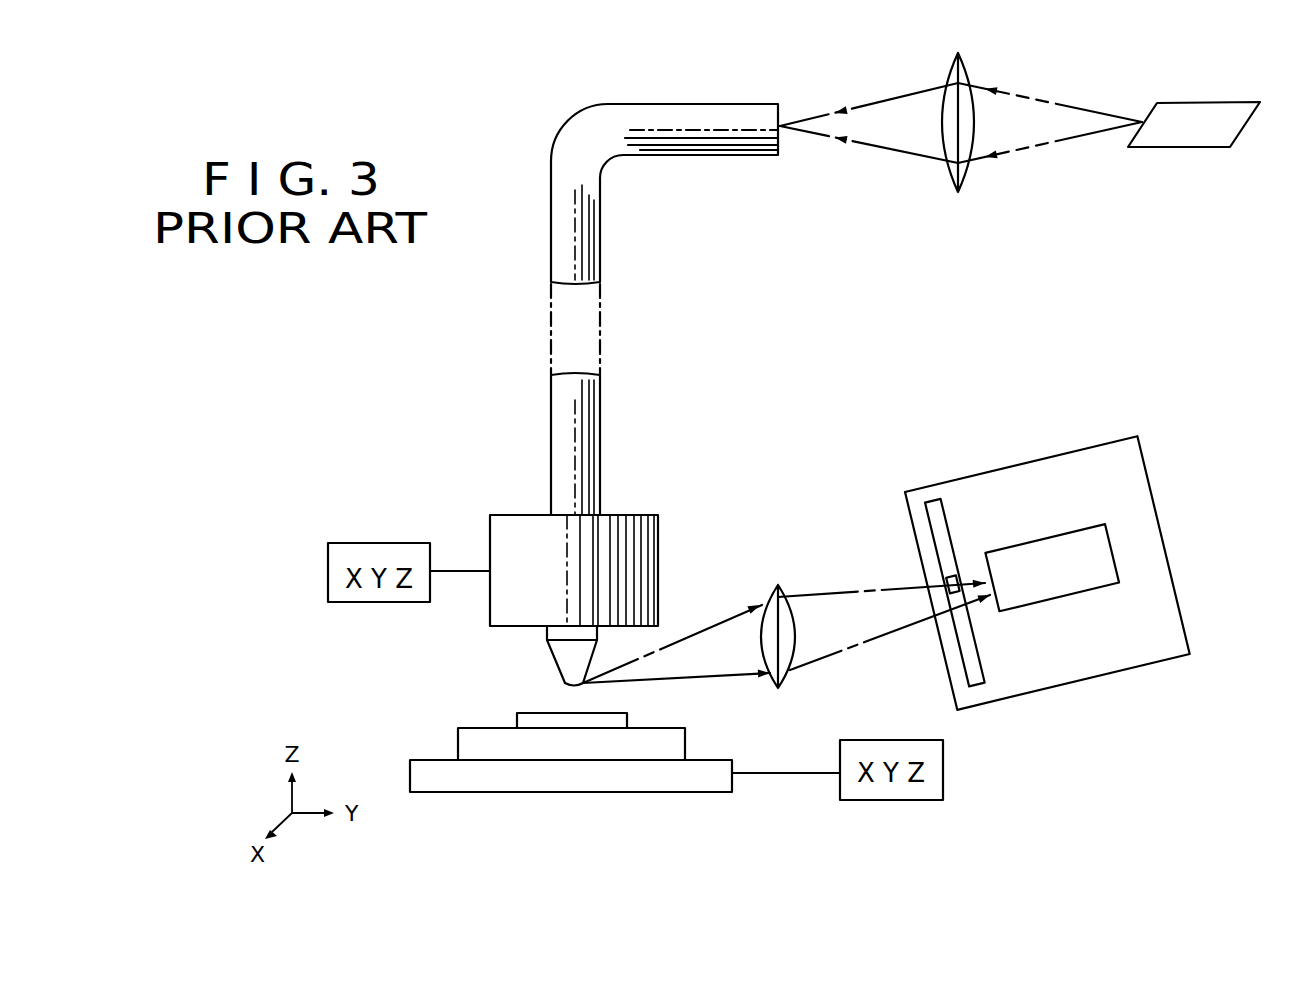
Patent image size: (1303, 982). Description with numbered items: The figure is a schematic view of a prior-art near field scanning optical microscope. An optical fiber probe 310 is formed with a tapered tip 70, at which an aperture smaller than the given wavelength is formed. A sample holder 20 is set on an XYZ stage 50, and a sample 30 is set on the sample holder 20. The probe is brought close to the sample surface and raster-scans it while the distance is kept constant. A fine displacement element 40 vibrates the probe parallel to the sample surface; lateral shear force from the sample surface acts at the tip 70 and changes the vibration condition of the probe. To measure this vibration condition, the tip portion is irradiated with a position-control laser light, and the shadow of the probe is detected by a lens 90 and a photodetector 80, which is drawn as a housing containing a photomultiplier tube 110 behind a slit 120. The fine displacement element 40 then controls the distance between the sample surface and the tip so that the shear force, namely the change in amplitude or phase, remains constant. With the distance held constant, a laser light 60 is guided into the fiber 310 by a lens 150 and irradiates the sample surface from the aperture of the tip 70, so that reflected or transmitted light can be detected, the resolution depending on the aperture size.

The lens 150 is at (963, 66).
The laser light 60 is at (1222, 102).
The optical fiber probe 310 is at (600, 395).
The fine displacement element 40 is at (658, 538).
The tapered tip 70 is at (547, 657).
The sample 30 is at (515, 717).
The sample holder 20 is at (685, 738).
The XYZ stage 50 is at (732, 786).
The photodetector 80 is at (1035, 458).
The lens 90 is at (780, 590).
The photomultiplier tube 110 is at (1068, 530).
The slit 120 is at (950, 643).